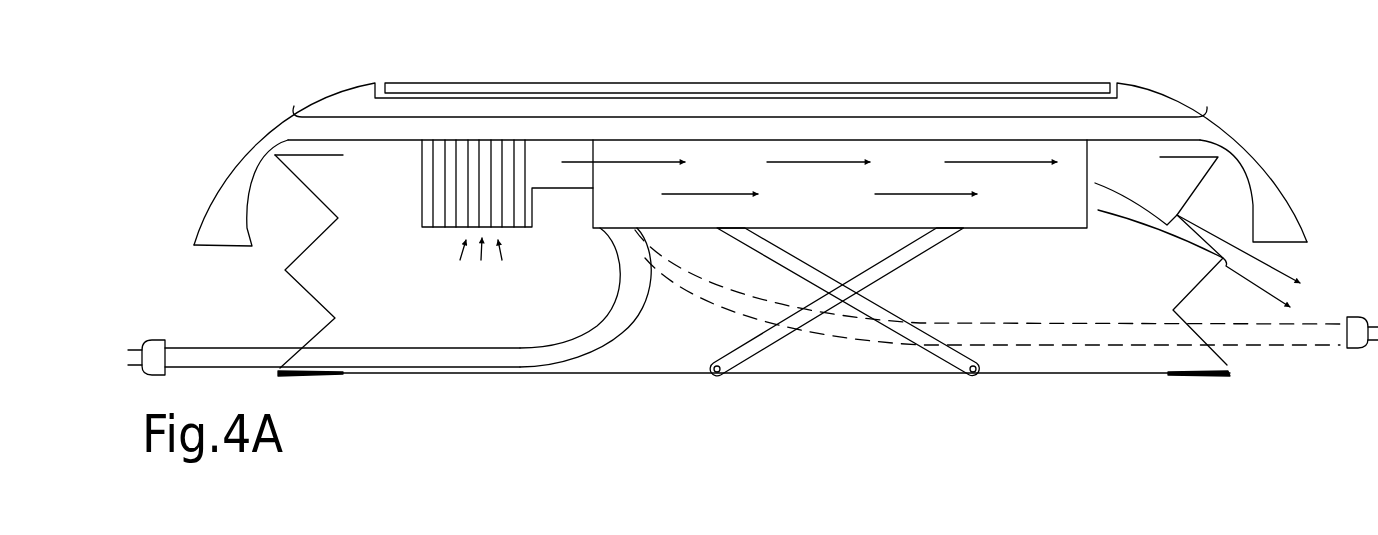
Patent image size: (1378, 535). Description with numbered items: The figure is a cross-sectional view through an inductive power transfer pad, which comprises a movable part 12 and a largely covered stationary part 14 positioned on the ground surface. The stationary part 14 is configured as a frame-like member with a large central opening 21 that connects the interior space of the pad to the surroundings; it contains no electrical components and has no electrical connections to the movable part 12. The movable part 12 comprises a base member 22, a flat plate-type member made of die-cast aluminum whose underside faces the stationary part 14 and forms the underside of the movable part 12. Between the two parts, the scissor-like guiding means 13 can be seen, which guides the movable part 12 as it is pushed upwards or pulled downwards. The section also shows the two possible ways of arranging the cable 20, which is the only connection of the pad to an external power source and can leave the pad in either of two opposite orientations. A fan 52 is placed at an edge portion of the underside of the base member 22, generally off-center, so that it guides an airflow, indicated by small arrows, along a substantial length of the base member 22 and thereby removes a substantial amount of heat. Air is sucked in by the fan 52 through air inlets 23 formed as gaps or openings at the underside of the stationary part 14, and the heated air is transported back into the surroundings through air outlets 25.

The movable part 12 is at (1248, 138).
The scissor-like guiding means 13 is at (927, 345).
The stationary part 14 is at (1233, 365).
The cable 20 is at (207, 348).
The central opening 21 is at (765, 380).
The base member 22 is at (230, 188).
The air inlets 23 is at (558, 375).
The air outlets 25 is at (1177, 215).
The fan 52 is at (475, 148).